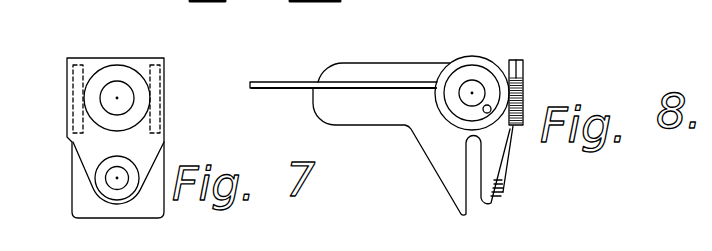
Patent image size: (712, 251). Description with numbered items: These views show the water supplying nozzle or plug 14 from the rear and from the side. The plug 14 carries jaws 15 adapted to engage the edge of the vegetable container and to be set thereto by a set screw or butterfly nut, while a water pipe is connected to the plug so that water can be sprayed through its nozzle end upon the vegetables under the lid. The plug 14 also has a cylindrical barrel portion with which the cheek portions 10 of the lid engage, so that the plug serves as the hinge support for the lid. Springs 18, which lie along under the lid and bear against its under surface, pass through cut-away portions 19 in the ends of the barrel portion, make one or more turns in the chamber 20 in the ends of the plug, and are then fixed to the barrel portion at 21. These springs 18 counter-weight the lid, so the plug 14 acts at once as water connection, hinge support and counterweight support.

In FIG. 7, the cheek portions 10 is at (164, 108).
In FIG. 8, the nozzle or plug 14 is at (373, 121).
In FIG. 7, the jaws 15 is at (91, 138).
In FIG. 8, the jaws 15 is at (464, 185).
In FIG. 8, the springs 18 is at (300, 82).
In FIG. 8, the cut-away portions 19 is at (475, 55).
In FIG. 7, the chamber 20 is at (84, 108).
In FIG. 8, the chamber 20 is at (505, 90).
In FIG. 8, the fixing point 21 is at (490, 113).